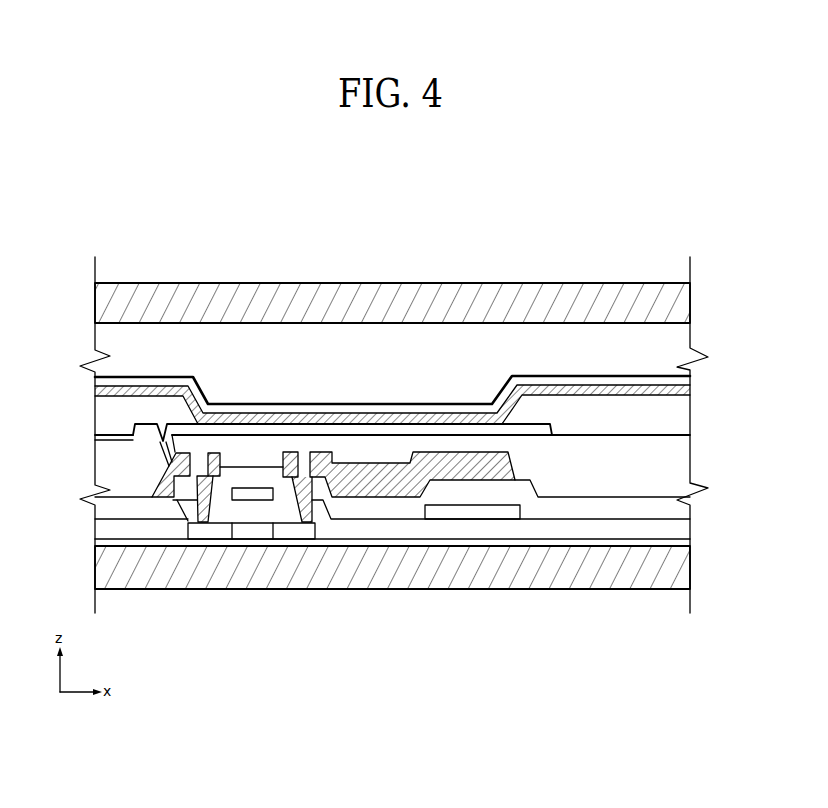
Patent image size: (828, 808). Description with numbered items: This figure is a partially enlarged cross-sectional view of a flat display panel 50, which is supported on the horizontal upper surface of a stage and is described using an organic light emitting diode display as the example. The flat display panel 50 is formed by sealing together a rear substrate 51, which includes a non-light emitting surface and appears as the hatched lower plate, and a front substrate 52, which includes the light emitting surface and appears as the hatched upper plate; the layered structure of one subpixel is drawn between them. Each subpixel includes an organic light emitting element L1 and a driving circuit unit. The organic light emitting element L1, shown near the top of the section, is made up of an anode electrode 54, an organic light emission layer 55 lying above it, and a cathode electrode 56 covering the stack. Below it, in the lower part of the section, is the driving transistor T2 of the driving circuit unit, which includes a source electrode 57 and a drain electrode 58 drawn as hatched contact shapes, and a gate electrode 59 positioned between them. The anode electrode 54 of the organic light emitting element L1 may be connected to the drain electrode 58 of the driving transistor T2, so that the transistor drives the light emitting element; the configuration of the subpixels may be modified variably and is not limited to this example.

The flat display panel 50 is at (405, 180).
The rear substrate 51 is at (418, 577).
The front substrate 52 is at (468, 290).
The anode electrode 54 is at (255, 432).
The organic light emission layer 55 is at (343, 407).
The cathode electrode 56 is at (301, 413).
The source electrode 57 is at (320, 470).
The drain electrode 58 is at (168, 498).
The gate electrode 59 is at (252, 494).
The driving transistor T2 is at (280, 544).
The organic light emitting element L1 is at (392, 317).